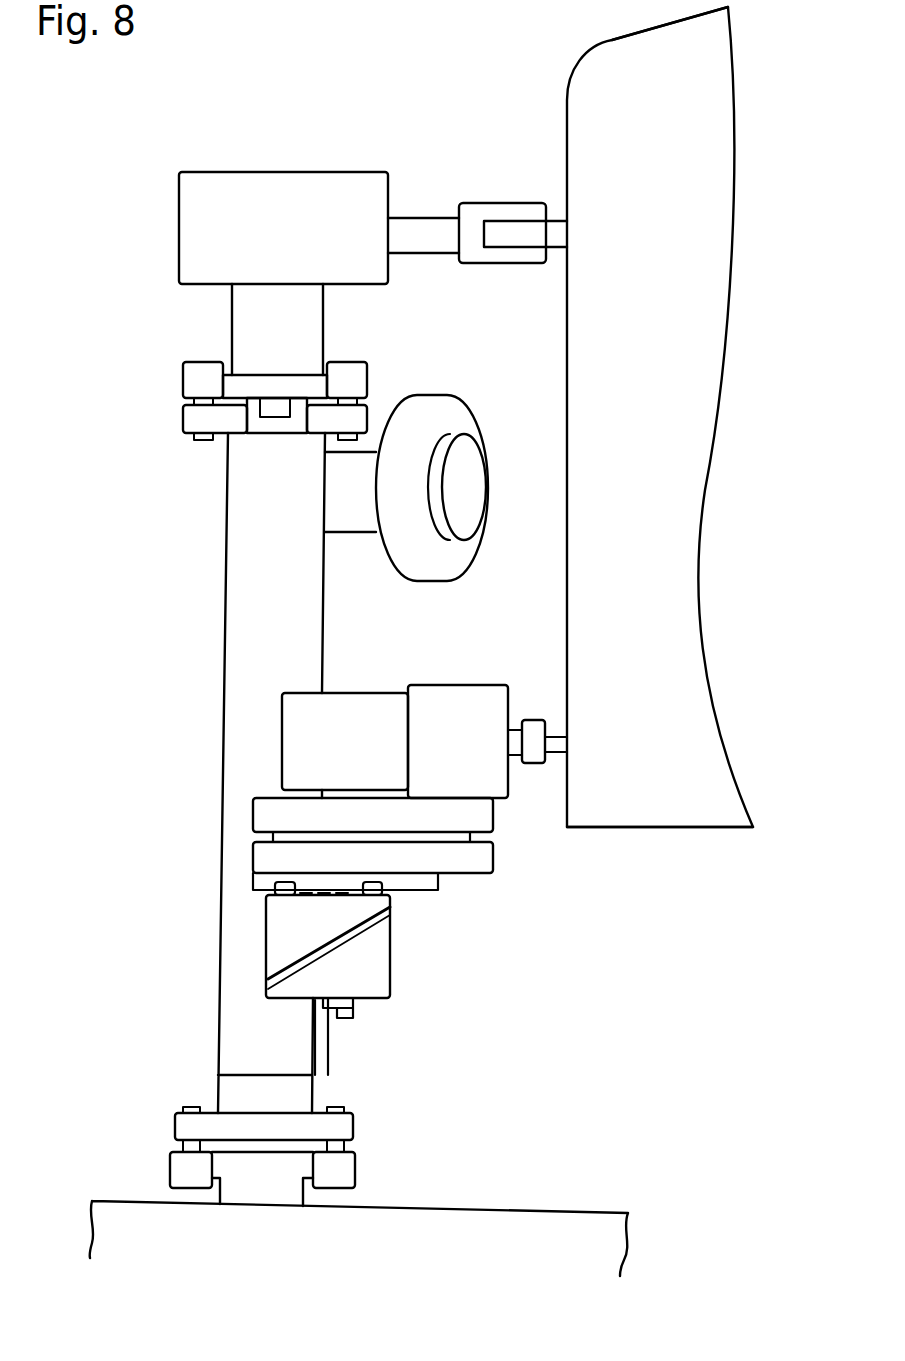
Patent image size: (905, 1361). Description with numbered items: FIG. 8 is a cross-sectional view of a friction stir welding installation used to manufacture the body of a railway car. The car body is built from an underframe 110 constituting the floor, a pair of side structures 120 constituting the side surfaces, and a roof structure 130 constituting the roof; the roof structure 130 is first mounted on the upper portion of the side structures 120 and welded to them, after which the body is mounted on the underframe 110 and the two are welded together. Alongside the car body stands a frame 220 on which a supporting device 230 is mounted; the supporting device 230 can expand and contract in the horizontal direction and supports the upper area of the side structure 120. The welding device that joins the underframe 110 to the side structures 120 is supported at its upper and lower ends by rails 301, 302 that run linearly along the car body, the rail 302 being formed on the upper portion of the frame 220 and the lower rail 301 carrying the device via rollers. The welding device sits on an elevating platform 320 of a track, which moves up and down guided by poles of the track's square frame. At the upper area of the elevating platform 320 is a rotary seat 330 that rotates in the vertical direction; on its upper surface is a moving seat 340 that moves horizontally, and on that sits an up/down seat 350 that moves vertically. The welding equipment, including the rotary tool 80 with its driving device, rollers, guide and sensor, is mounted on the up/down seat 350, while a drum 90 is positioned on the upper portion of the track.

The rotary tool 80 is at (555, 731).
The drum 90 is at (465, 550).
The underframe 110 is at (653, 826).
The side structure 120 is at (567, 472).
The roof structure 130 is at (660, 27).
The frame 220 is at (285, 196).
The supporting device 230 is at (507, 205).
The rail 301 is at (288, 384).
The rail 302 is at (283, 1167).
The elevating platform 320 is at (375, 978).
The rotary seat 330 is at (372, 908).
The moving seat 340 is at (472, 867).
The up/down seat 350 is at (483, 813).